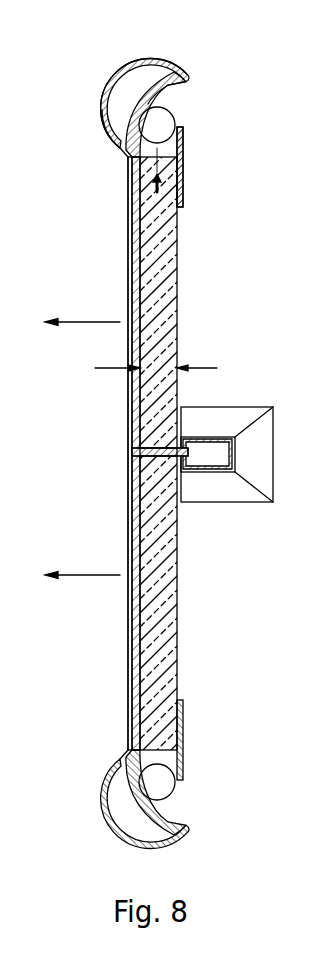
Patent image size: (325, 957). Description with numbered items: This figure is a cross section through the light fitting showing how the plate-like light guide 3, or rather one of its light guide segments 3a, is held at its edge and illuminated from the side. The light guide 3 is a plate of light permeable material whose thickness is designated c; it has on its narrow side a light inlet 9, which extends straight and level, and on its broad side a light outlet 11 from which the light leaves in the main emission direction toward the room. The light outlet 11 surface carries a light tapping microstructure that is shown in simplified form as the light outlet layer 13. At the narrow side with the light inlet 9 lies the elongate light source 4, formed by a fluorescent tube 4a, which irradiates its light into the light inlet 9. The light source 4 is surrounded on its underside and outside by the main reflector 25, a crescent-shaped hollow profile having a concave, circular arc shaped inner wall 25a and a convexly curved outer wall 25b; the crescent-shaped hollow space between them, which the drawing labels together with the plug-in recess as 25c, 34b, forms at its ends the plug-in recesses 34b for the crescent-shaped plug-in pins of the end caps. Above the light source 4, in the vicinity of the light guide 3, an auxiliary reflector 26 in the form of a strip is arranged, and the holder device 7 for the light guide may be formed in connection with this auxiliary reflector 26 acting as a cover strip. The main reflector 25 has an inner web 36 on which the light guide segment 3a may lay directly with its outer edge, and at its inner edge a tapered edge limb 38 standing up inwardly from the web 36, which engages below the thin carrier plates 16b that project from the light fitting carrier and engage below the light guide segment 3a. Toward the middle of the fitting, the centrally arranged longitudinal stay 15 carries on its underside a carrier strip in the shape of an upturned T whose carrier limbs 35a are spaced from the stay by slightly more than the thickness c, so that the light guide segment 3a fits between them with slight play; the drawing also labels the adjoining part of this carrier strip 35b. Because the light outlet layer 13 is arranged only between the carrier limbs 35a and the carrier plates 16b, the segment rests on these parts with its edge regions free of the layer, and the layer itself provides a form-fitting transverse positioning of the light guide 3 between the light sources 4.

The light guide 3 is at (181, 461).
The light guide segment 3a is at (168, 288).
The light source 4 is at (188, 119).
The fluorescent tube 4a is at (163, 117).
The holder device 7 is at (195, 69).
The light inlet 9 is at (182, 163).
The light outlet 11 is at (82, 320).
The light outlet layer 13 is at (138, 240).
The longitudinal stay 15 is at (237, 403).
The carrier plate 16b is at (130, 180).
The main reflector 25 is at (150, 111).
The inner wall 25a is at (166, 86).
The outer wall 25b is at (153, 60).
The hook outer arc 25c is at (76, 103).
The auxiliary reflector 26 is at (185, 142).
The plug-in recess 34b is at (110, 86).
The carrier limb 35a is at (140, 458).
The pin insertion 35b is at (157, 442).
The inner web 36 is at (132, 160).
The edge limb 38 is at (130, 190).
The thickness c is at (156, 356).